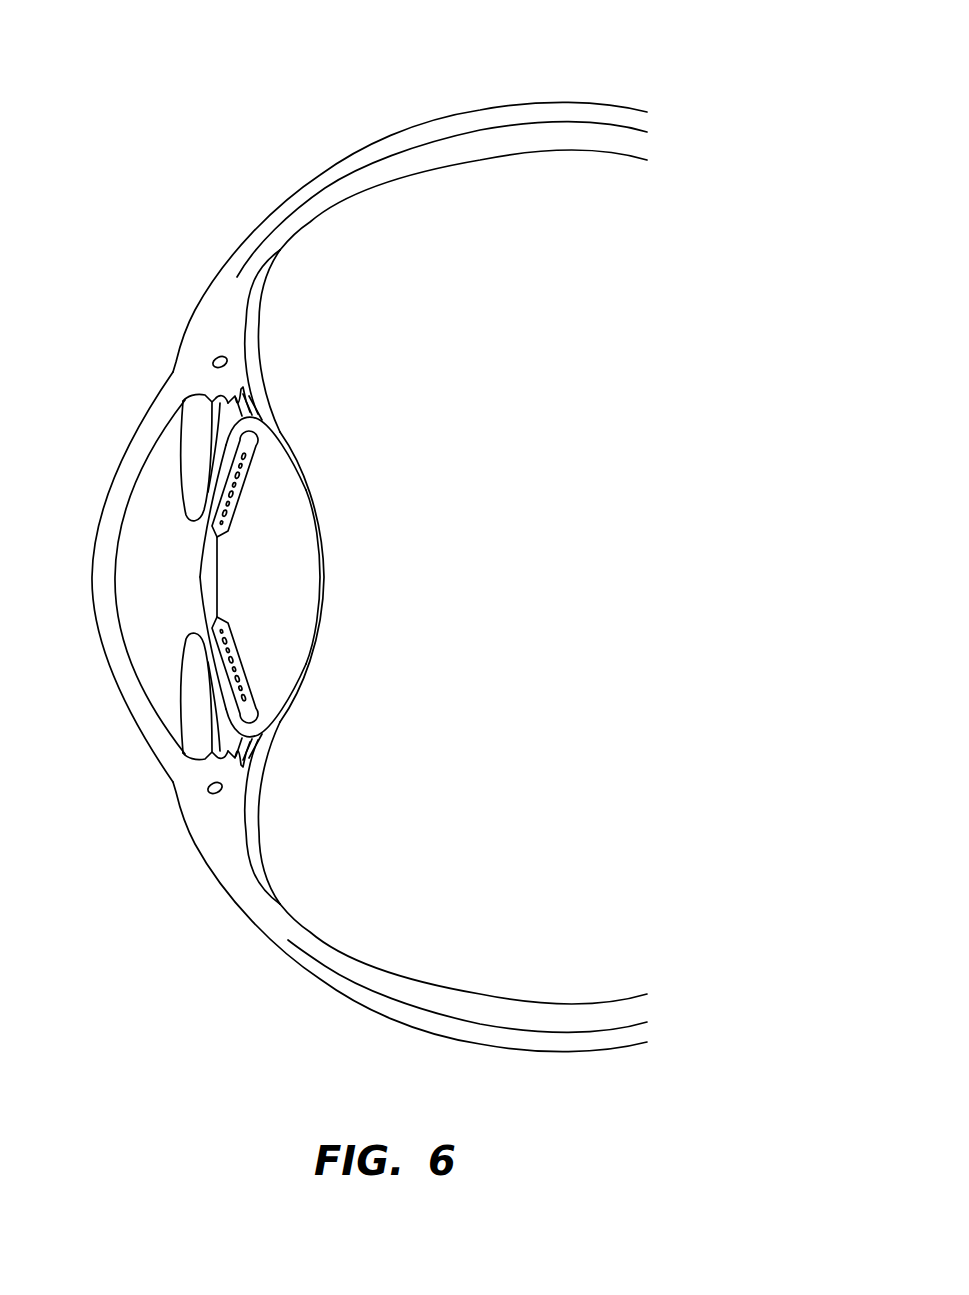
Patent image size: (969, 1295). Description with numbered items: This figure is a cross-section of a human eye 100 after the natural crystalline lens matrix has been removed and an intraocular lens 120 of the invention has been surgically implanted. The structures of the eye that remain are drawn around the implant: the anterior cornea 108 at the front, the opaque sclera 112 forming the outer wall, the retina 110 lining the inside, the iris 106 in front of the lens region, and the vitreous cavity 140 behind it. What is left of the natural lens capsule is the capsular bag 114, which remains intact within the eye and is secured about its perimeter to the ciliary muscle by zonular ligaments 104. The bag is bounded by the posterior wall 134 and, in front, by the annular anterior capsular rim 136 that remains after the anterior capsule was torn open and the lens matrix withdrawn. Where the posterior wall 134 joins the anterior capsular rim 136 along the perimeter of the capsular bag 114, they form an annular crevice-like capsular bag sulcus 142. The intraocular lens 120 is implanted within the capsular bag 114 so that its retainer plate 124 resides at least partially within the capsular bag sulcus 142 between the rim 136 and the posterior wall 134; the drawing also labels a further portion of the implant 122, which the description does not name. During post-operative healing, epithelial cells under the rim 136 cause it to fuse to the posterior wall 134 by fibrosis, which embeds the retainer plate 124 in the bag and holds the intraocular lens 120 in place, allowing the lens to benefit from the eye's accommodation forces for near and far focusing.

The human eye 100 is at (423, 74).
The zonular ligaments 104 is at (247, 407).
The iris 106 is at (188, 453).
The anterior cornea 108 is at (112, 632).
The retina 110 is at (573, 143).
The opaque sclera 112 is at (329, 172).
The capsular bag 114 is at (352, 606).
The intraocular lens 120 is at (193, 546).
The anterior optic surface 122 is at (202, 566).
The retainer plate 124 is at (233, 484).
The posterior wall 134 is at (323, 539).
The anterior capsular rim 136 is at (217, 440).
The vitreous cavity 140 is at (467, 967).
The capsular bag sulcus 142 is at (268, 446).